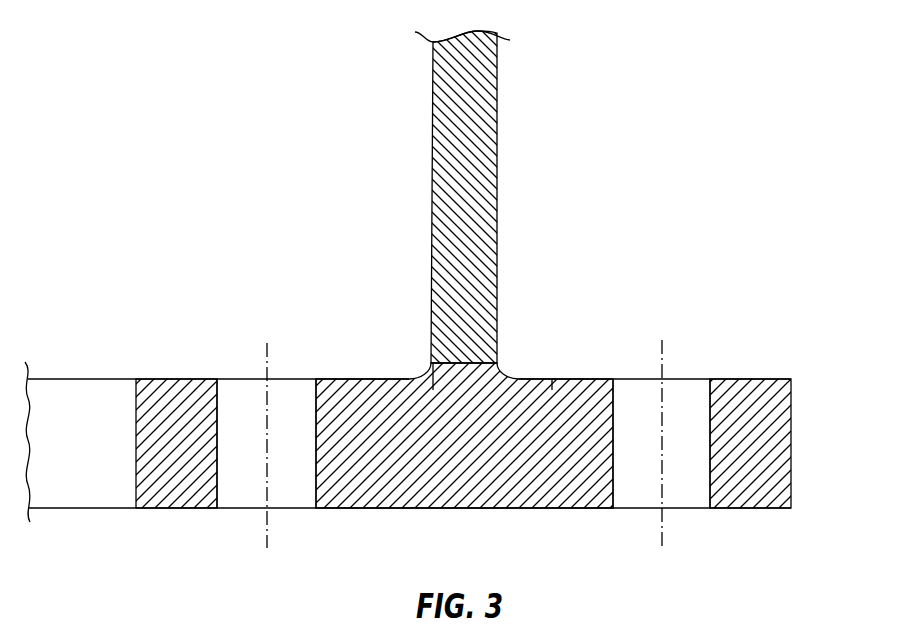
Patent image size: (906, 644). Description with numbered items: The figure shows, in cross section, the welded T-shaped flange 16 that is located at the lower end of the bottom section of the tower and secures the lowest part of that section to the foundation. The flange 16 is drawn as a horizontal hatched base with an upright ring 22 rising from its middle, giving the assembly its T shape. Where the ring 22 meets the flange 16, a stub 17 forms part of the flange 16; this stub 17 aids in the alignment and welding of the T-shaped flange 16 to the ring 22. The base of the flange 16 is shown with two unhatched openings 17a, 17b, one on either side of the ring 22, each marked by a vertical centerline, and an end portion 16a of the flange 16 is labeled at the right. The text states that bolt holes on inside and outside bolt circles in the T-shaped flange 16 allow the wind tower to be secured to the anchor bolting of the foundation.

The T-shaped flange 16 is at (470, 508).
The end portion of base member 16a is at (791, 442).
The stub 17 is at (505, 378).
The left bore 17a is at (245, 497).
The right bore 17b is at (688, 499).
The ring 22 is at (498, 138).